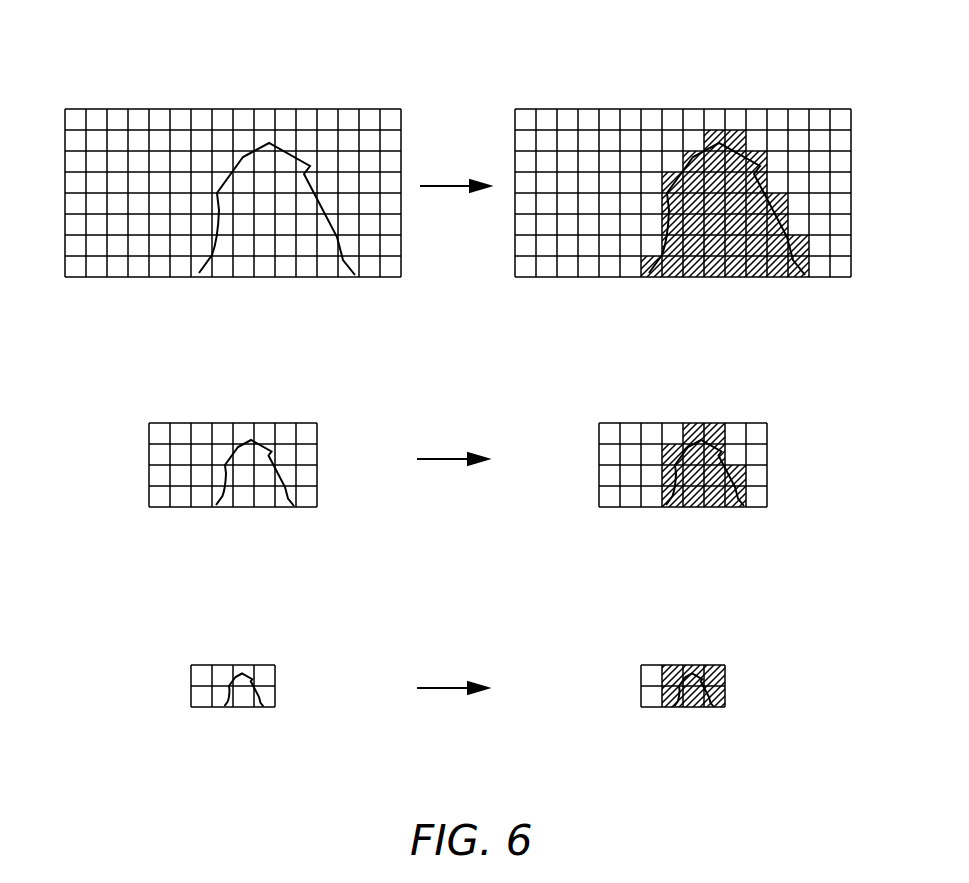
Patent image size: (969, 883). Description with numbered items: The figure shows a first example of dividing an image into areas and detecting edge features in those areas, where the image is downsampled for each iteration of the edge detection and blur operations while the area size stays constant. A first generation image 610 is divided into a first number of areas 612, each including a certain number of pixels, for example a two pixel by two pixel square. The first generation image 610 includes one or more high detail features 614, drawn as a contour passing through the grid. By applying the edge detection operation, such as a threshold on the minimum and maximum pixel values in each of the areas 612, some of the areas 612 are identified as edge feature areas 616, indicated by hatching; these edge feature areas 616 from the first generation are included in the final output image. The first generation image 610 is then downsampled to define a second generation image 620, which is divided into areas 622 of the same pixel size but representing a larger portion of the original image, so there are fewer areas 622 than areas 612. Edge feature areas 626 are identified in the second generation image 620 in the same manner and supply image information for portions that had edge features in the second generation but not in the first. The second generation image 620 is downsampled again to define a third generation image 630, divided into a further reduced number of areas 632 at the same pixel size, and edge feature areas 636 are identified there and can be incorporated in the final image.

The first generation image 610 is at (67, 68).
The areas 612 is at (137, 113).
The high detail features 614 is at (244, 160).
The edge feature areas 616 is at (730, 130).
The second generation image 620 is at (147, 382).
The areas 622 is at (177, 425).
The edge feature areas 626 is at (717, 425).
The third generation image 630 is at (190, 627).
The areas 632 is at (203, 668).
The edge feature areas 636 is at (712, 666).